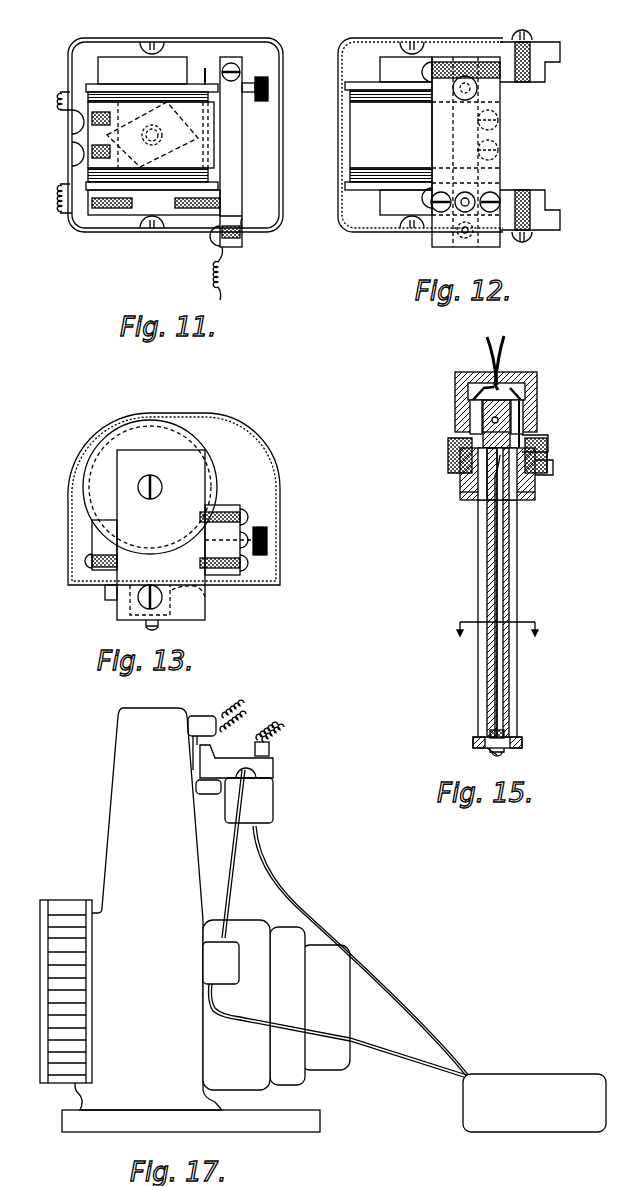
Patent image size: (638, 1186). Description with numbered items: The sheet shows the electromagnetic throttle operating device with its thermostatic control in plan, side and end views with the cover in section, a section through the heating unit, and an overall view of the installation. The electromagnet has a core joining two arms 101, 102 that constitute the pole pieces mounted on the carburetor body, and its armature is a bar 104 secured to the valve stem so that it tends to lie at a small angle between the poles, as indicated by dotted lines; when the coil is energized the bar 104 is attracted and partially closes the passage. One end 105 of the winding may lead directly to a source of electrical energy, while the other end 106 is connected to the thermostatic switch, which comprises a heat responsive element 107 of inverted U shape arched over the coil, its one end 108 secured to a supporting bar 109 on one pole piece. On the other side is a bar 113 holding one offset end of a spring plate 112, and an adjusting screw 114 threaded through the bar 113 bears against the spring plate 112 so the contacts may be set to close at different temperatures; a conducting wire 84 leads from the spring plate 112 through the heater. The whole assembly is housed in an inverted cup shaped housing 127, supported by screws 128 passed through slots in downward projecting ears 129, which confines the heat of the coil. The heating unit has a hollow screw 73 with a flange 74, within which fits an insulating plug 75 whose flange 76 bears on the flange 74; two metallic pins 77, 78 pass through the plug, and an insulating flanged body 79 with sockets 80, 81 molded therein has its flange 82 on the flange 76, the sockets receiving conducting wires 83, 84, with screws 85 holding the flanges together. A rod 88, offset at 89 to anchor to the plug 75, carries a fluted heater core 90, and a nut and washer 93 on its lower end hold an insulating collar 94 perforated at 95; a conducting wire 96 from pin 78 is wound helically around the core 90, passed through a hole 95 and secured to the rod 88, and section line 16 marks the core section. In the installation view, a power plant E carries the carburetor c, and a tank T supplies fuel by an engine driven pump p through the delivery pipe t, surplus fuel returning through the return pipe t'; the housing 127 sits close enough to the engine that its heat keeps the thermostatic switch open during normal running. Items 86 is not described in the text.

In FIG. 11, the arm 101 is at (117, 57).
In FIG. 12, the arm 101 is at (390, 57).
In FIG. 11, the arm 102 is at (178, 215).
In FIG. 12, the arm 102 is at (395, 207).
In FIG. 13, the arm 102 is at (190, 471).
In FIG. 11, the bar 104 is at (190, 138).
In FIG. 11, the end of winding 105 is at (60, 216).
In FIG. 11, the end of winding 106 is at (63, 94).
In FIG. 11, the heat responsive element 107 is at (97, 137).
In FIG. 13, the end of heat responsive element 108 is at (92, 535).
In FIG. 11, the supporting bar 109 is at (112, 210).
In FIG. 13, the supporting bar 109 is at (100, 566).
In FIG. 11, the spring plate 112 is at (205, 68).
In FIG. 11, the bar 113 is at (240, 118).
In FIG. 12, the bar 113 is at (500, 135).
In FIG. 13, the bar 113 is at (225, 512).
In FIG. 11, the adjusting screw 114 is at (268, 86).
In FIG. 12, the adjusting screw 114 is at (478, 93).
In FIG. 13, the adjusting screw 114 is at (268, 540).
In FIG. 11, the housing 127 is at (187, 40).
In FIG. 12, the housing 127 is at (436, 42).
In FIG. 13, the housing 127 is at (262, 440).
In FIG. 12, the screw 128 is at (528, 40).
In FIG. 13, the screw 128 is at (140, 600).
In FIG. 13, the ear 129 is at (190, 607).
In FIG. 15, the section line 16- 16 is at (494, 640).
In FIG. 15, the hollow screw 73 is at (536, 490).
In FIG. 15, the flange 74 is at (553, 470).
In FIG. 15, the insulating plug 75 is at (470, 500).
In FIG. 15, the flange 76 is at (548, 460).
In FIG. 15, the metallic pin 77 is at (520, 496).
In FIG. 15, the metallic pin 78 is at (478, 480).
In FIG. 15, the insulating flanged body 79 is at (483, 418).
In FIG. 15, the conducting socket 80 is at (520, 400).
In FIG. 15, the conducting socket 81 is at (462, 402).
In FIG. 15, the flange 82 is at (545, 447).
In FIG. 15, the conducting wire 83 is at (507, 345).
In FIG. 11, the conducting wire 84 is at (225, 286).
In FIG. 15, the conducting wire 84 is at (490, 357).
In FIG. 15, the screw 85 is at (535, 438).
In FIG. 15, the lock nut 86 is at (450, 440).
In FIG. 15, the rod 88 is at (488, 538).
In FIG. 15, the offset 89 is at (484, 518).
In FIG. 15, the heater core 90 is at (510, 564).
In FIG. 15, the nut and washer 93 is at (505, 752).
In FIG. 15, the insulating collar 94 is at (518, 740).
In FIG. 15, the hole 95 is at (510, 736).
In FIG. 15, the conducting wire 96 is at (488, 749).
In FIG. 17, the power plant E is at (160, 803).
In FIG. 17, the carburetor c is at (275, 763).
In FIG. 17, the delivery pipe t is at (235, 854).
In FIG. 17, the return pipe t' is at (364, 955).
In FIG. 17, the engine driven pump p is at (336, 1010).
In FIG. 17, the tank T is at (534, 1103).